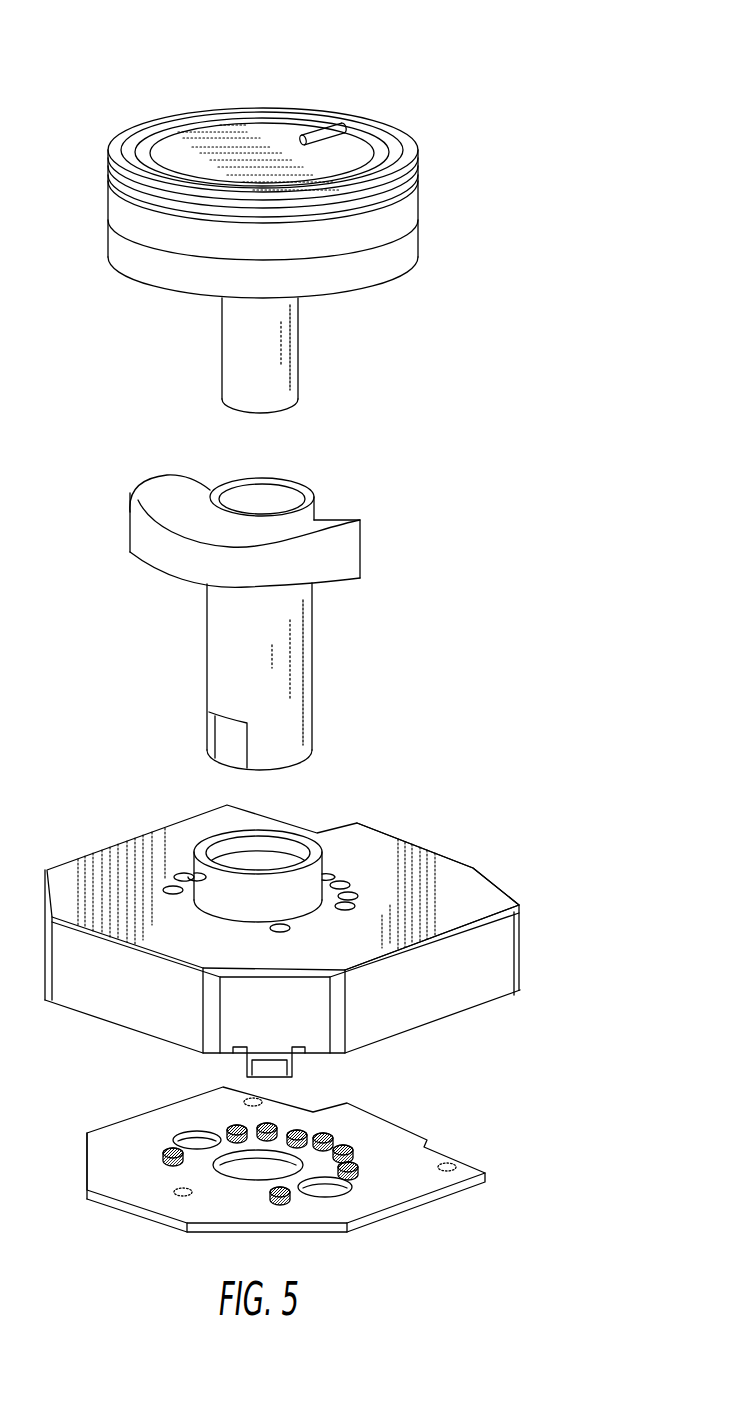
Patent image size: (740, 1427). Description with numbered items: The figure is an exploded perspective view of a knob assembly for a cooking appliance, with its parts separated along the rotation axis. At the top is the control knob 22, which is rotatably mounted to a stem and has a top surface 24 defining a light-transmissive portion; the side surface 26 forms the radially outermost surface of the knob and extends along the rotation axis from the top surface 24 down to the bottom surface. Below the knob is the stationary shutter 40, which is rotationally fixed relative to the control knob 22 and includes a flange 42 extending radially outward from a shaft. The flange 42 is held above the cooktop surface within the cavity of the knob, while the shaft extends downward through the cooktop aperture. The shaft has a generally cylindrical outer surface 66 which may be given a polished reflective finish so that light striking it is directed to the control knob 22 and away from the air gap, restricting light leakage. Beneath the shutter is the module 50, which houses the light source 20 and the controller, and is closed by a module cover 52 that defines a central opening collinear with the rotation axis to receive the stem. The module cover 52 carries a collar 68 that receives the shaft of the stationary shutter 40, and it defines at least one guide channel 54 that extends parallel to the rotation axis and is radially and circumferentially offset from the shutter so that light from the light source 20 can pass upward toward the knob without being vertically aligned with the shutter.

The light source 20 is at (373, 1167).
The control knob 22 is at (407, 162).
The top surface 24 is at (263, 147).
The side surface 26 is at (427, 248).
The stationary shutter 40 is at (246, 676).
The flange 42 is at (128, 522).
The module 50 is at (329, 912).
The module cover 52 is at (447, 910).
The guide channel 54 is at (365, 905).
The outer surface 66 is at (238, 661).
The collar 68 is at (203, 888).